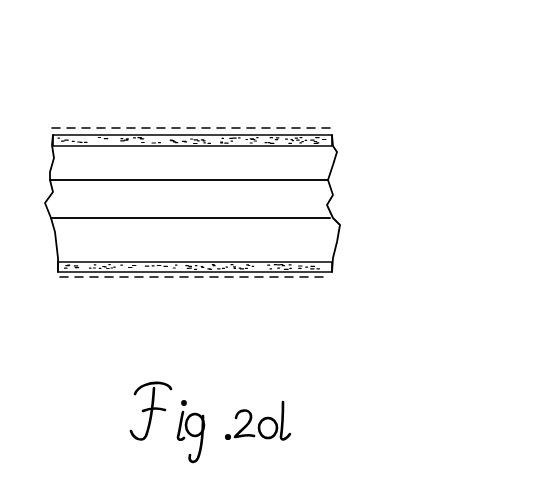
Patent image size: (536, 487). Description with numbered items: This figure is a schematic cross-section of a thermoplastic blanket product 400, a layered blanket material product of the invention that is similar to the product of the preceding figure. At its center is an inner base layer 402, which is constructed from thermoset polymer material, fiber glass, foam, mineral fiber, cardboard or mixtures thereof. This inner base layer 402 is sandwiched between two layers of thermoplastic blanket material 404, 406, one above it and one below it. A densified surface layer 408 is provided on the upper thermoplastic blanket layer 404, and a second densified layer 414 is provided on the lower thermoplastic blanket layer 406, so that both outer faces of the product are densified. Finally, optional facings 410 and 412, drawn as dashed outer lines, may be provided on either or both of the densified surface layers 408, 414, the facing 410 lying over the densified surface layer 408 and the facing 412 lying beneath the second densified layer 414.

The thermoplastic blanket product 400 is at (240, 105).
The inner base layer 402 is at (312, 204).
The thermoplastic blanket material layer 404 is at (320, 162).
The thermoplastic blanket material layer 406 is at (322, 245).
The densified surface layer 408 is at (256, 134).
The facing 410 is at (145, 128).
The facing 412 is at (188, 282).
The second densified layer 414 is at (308, 267).